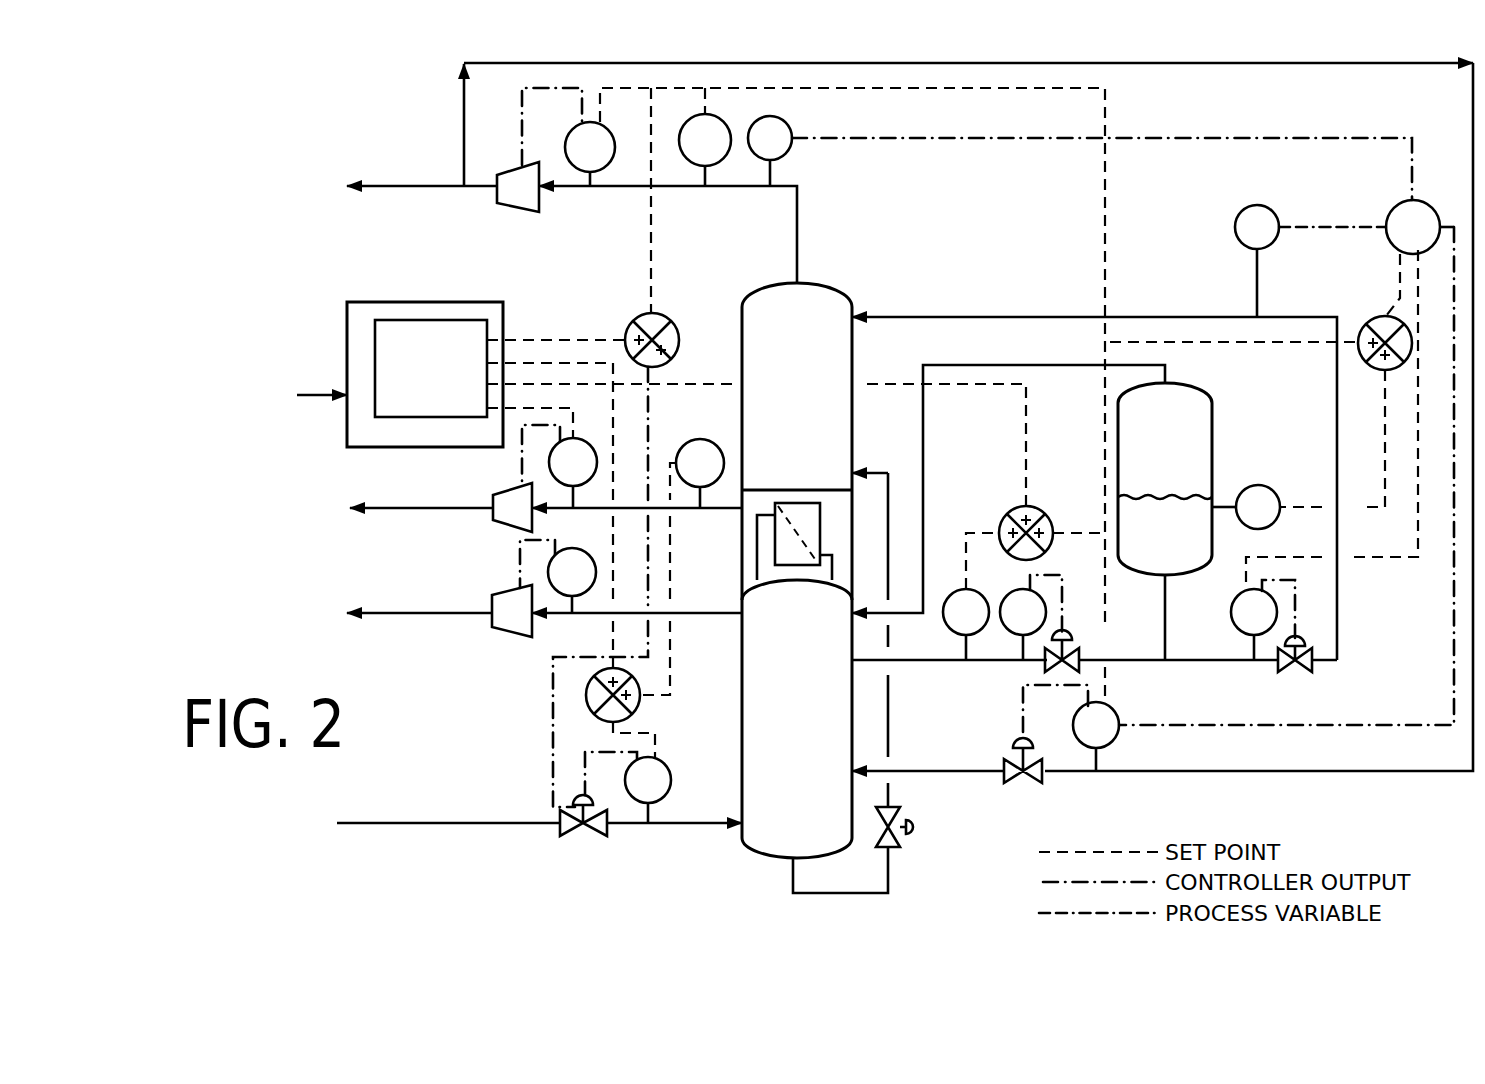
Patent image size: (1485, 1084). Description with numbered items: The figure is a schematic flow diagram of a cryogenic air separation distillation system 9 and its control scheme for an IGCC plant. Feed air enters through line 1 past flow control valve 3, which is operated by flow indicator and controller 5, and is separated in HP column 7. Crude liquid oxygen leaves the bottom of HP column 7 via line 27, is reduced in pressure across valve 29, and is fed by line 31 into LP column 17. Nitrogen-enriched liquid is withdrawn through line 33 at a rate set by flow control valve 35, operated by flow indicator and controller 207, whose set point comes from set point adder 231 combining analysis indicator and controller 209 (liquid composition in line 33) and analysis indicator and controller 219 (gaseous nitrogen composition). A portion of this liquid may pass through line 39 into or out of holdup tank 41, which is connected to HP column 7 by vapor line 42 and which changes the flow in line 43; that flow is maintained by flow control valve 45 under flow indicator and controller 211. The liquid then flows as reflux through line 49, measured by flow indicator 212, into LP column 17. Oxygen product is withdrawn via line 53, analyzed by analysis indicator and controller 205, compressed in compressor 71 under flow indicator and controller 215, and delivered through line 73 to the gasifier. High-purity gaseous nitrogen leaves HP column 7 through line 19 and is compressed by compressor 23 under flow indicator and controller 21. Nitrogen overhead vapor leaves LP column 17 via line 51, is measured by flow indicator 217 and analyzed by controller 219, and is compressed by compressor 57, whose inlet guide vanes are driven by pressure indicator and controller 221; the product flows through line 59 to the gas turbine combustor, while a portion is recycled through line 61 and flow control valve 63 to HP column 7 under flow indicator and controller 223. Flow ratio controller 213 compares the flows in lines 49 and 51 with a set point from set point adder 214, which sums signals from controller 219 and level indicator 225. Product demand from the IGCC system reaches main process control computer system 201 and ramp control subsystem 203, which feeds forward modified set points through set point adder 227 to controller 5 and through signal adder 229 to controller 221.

The feed air line 1 is at (465, 823).
The flow control valve 3 is at (583, 836).
The flow indicator and controller 5 is at (672, 775).
The HP column 7 is at (747, 848).
The distillation system 9 is at (835, 260).
The LP column 17 is at (860, 302).
The line 19 is at (715, 615).
The flow indicator and controller 21 is at (580, 615).
The compressor 23 is at (492, 598).
The line 27 is at (890, 873).
The valve 29 is at (915, 822).
The line 31 is at (885, 472).
The line 33 is at (930, 661).
The flow control valve 35 is at (1047, 661).
The line 39 is at (1165, 620).
The holdup tank 41 is at (1214, 408).
The vapor line 42 is at (1001, 365).
The line 43 is at (1208, 662).
The flow control valve 45 is at (1300, 672).
The line 49 is at (1337, 413).
The line 51 is at (725, 186).
The line 53 is at (717, 510).
The compressor 57 is at (520, 212).
The line 59 is at (420, 186).
The line 61 is at (464, 118).
The flow control valve 63 is at (1013, 746).
The compressor 71 is at (493, 497).
The line 73 is at (391, 508).
The main process control computer system 201 is at (347, 320).
The ramp control subsystem 203 is at (472, 320).
The analysis indicator and controller 205 is at (690, 440).
The flow indicator and controller 207 is at (1005, 598).
The analysis indicator and controller 209 is at (952, 628).
The flow indicator and controller 211 is at (1231, 612).
The flow indicator 212 is at (1240, 218).
The flow ratio controller 213 is at (1392, 211).
The set point adder 214 is at (1373, 318).
The flow indicator and controller 215 is at (549, 463).
The flow indicator 217 is at (785, 158).
The analysis indicator and controller 219 is at (690, 120).
The pressure indicator and controller 221 is at (565, 145).
The flow indicator and controller 223 is at (1112, 740).
The level indicator 225 is at (1258, 485).
The set point adder 227 is at (585, 695).
The signal adder 229 is at (635, 318).
The set point adder 231 is at (1010, 512).